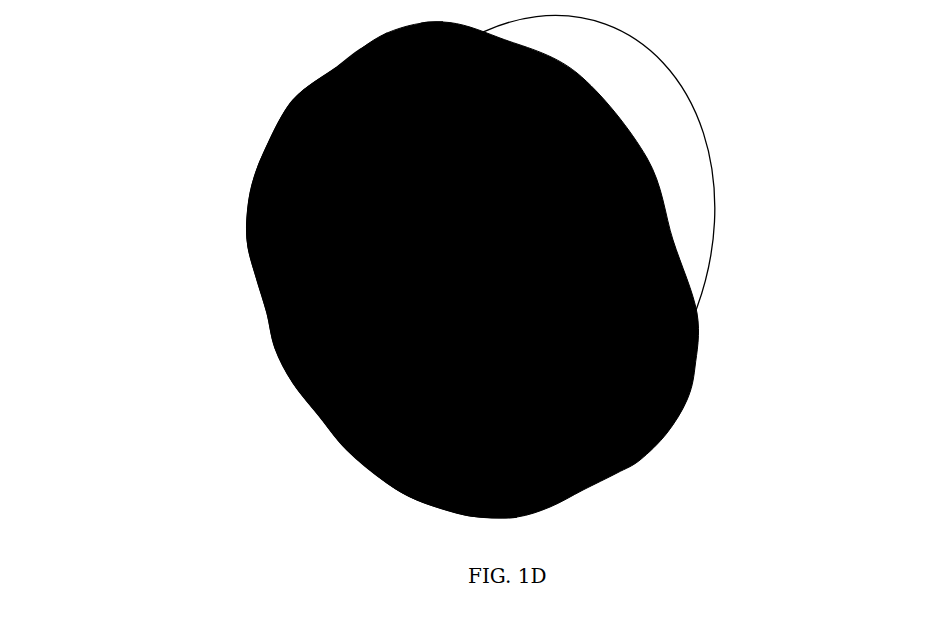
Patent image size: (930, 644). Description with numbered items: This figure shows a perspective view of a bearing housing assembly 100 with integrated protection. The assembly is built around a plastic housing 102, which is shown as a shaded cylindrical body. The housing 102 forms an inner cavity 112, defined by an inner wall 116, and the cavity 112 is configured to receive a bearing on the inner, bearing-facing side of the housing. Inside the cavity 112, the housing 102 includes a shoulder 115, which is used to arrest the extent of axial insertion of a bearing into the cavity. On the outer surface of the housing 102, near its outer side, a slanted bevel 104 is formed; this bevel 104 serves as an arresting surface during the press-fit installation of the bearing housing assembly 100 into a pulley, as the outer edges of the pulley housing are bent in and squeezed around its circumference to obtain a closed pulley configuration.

The bearing housing assembly 100 is at (139, 102).
The housing 102 is at (378, 140).
The bevel 104 is at (247, 246).
The inner cavity 112 is at (534, 180).
The shoulder 115 is at (543, 228).
The inner wall 116 is at (608, 282).